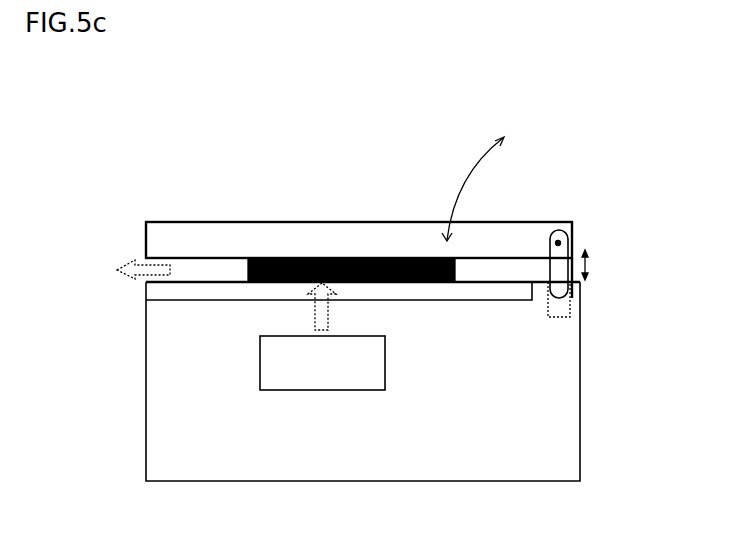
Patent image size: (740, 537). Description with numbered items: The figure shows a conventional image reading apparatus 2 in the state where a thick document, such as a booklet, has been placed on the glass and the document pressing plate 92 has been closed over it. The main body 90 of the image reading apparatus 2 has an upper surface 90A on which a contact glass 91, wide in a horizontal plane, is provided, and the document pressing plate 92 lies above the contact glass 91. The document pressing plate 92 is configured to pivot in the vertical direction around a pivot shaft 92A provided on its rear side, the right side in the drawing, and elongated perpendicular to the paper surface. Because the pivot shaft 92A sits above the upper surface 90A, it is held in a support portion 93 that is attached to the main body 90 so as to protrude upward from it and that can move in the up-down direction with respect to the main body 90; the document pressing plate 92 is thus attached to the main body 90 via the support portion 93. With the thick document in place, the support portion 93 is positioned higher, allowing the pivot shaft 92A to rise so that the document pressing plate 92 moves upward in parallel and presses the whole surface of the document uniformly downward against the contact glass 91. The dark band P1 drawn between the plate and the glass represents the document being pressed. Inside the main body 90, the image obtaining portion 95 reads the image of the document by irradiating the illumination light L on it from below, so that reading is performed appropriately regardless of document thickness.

The image reading apparatus 2 is at (407, 382).
The main body 90 is at (580, 413).
The upper surface 90A is at (538, 282).
The contact glass 91 is at (218, 286).
The document pressing plate 92 is at (275, 235).
The pivot shaft 92A is at (561, 243).
The support portion 93 is at (574, 284).
The image obtaining portion 95 is at (385, 362).
The light shielding portion P1 is at (383, 257).
The illumination light L is at (155, 262).